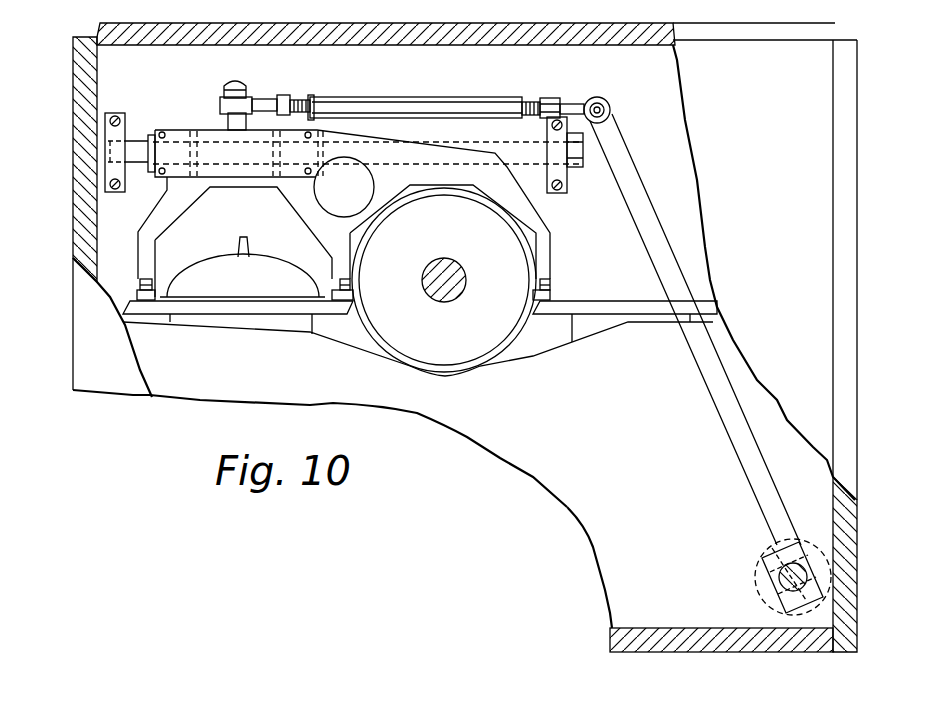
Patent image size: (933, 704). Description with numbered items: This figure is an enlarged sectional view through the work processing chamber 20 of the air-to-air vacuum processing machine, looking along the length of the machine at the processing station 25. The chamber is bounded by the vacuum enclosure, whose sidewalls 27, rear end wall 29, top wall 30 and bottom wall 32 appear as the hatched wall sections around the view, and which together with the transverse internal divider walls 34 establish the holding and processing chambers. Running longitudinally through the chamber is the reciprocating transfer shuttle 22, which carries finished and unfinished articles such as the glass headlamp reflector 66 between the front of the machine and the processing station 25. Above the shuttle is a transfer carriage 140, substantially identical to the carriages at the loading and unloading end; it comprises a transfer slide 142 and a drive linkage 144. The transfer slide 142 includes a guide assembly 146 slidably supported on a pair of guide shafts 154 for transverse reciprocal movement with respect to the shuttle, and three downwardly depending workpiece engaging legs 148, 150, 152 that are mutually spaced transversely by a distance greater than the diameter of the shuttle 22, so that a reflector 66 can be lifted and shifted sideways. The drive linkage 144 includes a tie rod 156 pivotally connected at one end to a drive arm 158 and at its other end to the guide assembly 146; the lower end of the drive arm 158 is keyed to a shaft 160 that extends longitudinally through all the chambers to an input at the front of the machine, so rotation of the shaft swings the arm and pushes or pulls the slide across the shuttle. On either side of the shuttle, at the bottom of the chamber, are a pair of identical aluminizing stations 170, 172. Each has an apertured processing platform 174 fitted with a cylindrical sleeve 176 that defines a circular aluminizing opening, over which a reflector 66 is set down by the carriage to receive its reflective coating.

The work processing chamber 20 is at (500, 432).
The transfer shuttle 22 is at (840, 508).
The processing station 25 is at (227, 350).
The sidewalls 27 is at (83, 193).
The rear end wall 29 is at (813, 57).
The top wall 30 is at (100, 27).
The bottom wall 32 is at (752, 640).
The transverse internal divider walls 34 is at (613, 548).
The reflector 66 is at (217, 277).
The transfer carriage 140 is at (622, 116).
The transfer slide 142 is at (200, 127).
The drive linkage 144 is at (377, 92).
The guide assembly 146 is at (168, 133).
The workpiece engaging leg 148 is at (143, 276).
The workpiece engaging leg 150 is at (343, 262).
The workpiece engaging leg 152 is at (546, 264).
The guide shafts 154 is at (517, 155).
The tie rod 156 is at (467, 105).
The drive arm 158 is at (635, 200).
The shaft 160 is at (782, 580).
The aluminizing station 170 is at (337, 326).
The aluminizing station 172 is at (548, 326).
The processing platform 174 is at (143, 307).
The cylindrical sleeve 176 is at (307, 324).